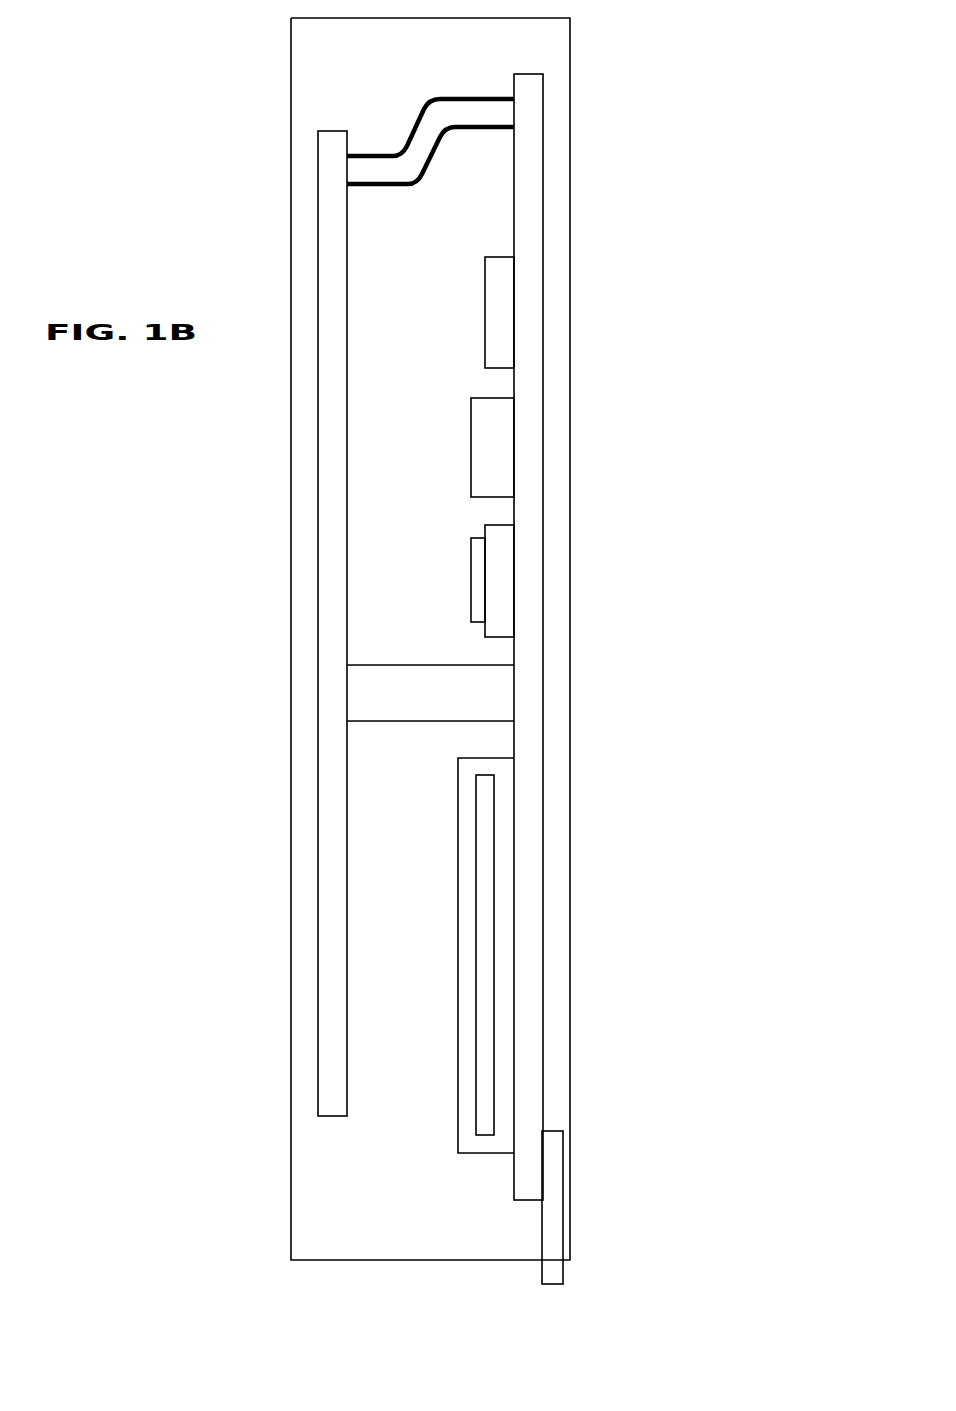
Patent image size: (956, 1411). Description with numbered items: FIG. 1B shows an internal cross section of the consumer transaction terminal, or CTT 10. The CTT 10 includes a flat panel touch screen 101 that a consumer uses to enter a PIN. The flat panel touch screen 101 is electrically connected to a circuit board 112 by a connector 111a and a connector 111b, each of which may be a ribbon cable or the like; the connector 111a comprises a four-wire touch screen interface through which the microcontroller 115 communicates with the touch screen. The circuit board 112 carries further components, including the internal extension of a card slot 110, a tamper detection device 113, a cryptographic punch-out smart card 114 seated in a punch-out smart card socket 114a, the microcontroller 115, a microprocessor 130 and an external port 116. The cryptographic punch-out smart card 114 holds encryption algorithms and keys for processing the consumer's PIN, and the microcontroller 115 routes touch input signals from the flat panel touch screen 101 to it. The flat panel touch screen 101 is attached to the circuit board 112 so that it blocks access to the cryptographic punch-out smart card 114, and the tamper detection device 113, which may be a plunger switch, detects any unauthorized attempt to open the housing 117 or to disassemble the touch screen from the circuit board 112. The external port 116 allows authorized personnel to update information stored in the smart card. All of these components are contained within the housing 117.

The consumer transaction terminal 10 is at (663, 122).
The flat panel touch screen 101 is at (347, 379).
The card slot 110 is at (458, 947).
The connector 111a is at (400, 187).
The connector 111b is at (422, 106).
The circuit board 112 is at (524, 74).
The tamper detection device 113 is at (436, 665).
The cryptographic punch-out smart card 114 is at (471, 573).
The punch-out smart card socket 114a is at (485, 526).
The microcontroller 115 is at (471, 446).
The external port 116 is at (563, 1282).
The housing 117 is at (291, 1172).
The microprocessor 130 is at (485, 312).